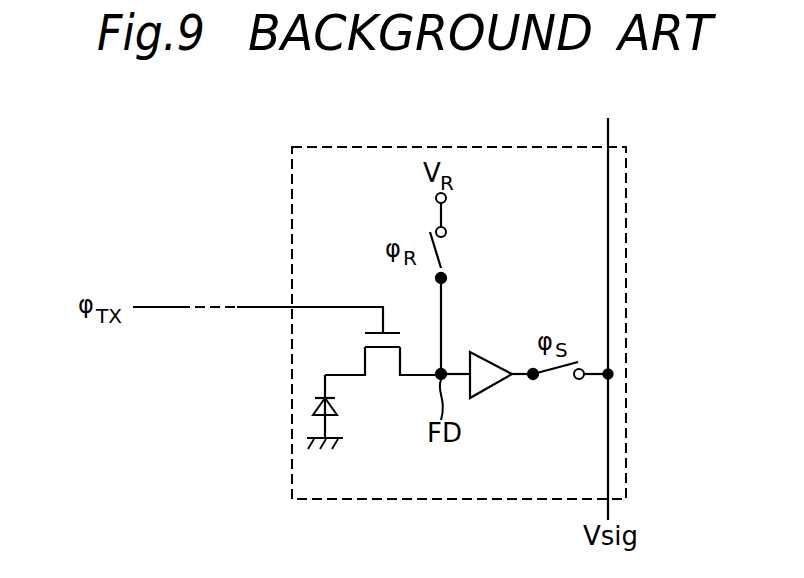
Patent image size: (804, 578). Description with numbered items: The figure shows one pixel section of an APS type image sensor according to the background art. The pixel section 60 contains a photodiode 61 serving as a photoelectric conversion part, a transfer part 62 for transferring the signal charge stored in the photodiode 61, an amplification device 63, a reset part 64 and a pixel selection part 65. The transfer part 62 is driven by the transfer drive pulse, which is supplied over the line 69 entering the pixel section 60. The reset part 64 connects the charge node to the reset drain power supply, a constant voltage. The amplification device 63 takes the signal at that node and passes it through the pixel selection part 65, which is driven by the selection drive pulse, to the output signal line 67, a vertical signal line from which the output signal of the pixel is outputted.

The pixel 60 is at (345, 147).
The photodiode 61 is at (330, 416).
The transfer part 62 is at (383, 362).
The amplification device 63 is at (494, 356).
The reset part 64 is at (444, 250).
The pixel selection part 65 is at (558, 377).
The output signal line (vertical signal line) 67 is at (610, 132).
The transfer control line 69 is at (262, 305).